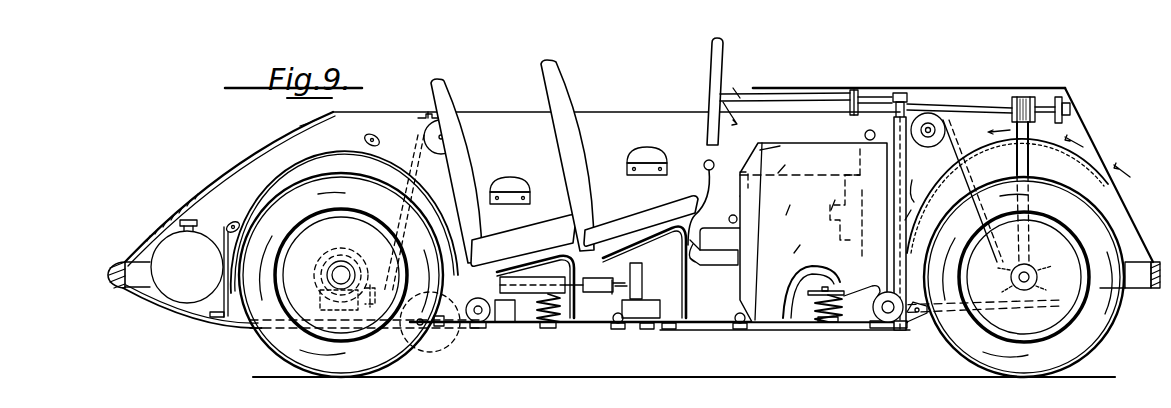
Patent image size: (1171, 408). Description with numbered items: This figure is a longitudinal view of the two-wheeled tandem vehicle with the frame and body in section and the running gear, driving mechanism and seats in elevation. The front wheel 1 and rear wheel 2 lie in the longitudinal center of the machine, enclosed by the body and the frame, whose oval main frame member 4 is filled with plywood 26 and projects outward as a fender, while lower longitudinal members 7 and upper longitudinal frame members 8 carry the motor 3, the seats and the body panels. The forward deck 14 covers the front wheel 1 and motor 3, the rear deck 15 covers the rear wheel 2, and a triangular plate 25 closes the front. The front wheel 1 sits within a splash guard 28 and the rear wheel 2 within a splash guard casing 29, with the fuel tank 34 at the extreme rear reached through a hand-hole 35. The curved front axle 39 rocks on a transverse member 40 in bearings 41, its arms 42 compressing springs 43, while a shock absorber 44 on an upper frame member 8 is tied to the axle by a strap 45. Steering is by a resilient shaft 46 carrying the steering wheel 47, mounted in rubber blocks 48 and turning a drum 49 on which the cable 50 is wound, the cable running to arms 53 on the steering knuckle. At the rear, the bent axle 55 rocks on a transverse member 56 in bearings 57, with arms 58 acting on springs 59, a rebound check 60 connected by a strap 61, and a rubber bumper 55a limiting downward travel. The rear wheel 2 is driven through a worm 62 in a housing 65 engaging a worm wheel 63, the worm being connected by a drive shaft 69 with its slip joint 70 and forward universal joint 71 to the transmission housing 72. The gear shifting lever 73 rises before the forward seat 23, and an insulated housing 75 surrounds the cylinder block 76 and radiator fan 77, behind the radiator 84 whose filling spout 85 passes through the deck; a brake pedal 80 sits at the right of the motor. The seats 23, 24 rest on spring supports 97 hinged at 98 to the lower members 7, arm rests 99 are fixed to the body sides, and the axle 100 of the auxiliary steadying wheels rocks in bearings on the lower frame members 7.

The front wheel 1 is at (1100, 344).
The rear wheel 2 is at (343, 175).
The motor 3 is at (733, 213).
The main frame member 4 is at (114, 290).
The longitudinal members 7 is at (694, 331).
The upper longitudinal frame members 8 is at (490, 115).
The forward deck 14 is at (818, 90).
The rear deck 15 is at (322, 126).
The forward seat 23 is at (665, 202).
The rear seat 24 is at (559, 223).
The triangular plate 25 is at (1098, 140).
The plywood filling 26 is at (109, 272).
The front wheel splash guard 28 is at (996, 150).
The rear wheel splash guard 29 is at (258, 188).
The fuel tank 34 is at (187, 261).
The hand-hole 35 is at (195, 194).
The front axle 39 is at (916, 322).
The transverse member 40 is at (888, 322).
The bearings 41 is at (874, 331).
The arms 42 is at (852, 289).
The front springs 43 is at (837, 328).
The shock absorber 44 is at (950, 124).
The strap 45 is at (1046, 148).
The steering shaft 46 is at (744, 96).
The steering wheel 47 is at (712, 47).
The rubber blocks 48 is at (860, 93).
The drum 49 is at (1020, 96).
The cable 50 is at (1028, 162).
The arms 53 is at (1039, 280).
The rear axle 55 is at (458, 341).
The rubber bumper 55a is at (414, 352).
The transverse member 56 is at (484, 326).
The bearings 57 is at (507, 326).
The arms 58 is at (520, 294).
The rear springs 59 is at (546, 326).
The rebound check 60 is at (428, 114).
The strap 61 is at (426, 150).
The worm 62 is at (321, 298).
The worm wheel 63 is at (348, 254).
The worm housing 65 is at (336, 250).
The drive shaft 69 is at (441, 328).
The slip joint 70 is at (594, 278).
The forward universal joint 71 is at (622, 297).
The transmission housing 72 is at (702, 272).
The gear shifting lever 73 is at (706, 168).
The insulated housing 75 is at (808, 144).
The cylinder block 76 is at (814, 167).
The radiator fan 77 is at (884, 142).
The brake pedal 80 is at (832, 262).
The radiator 84 is at (910, 180).
The filling spout 85 is at (902, 92).
The spring supports 97 is at (543, 254).
The hinges 98 is at (616, 328).
The arm rests 99 is at (516, 178).
The auxiliary wheel axle 100 is at (659, 331).